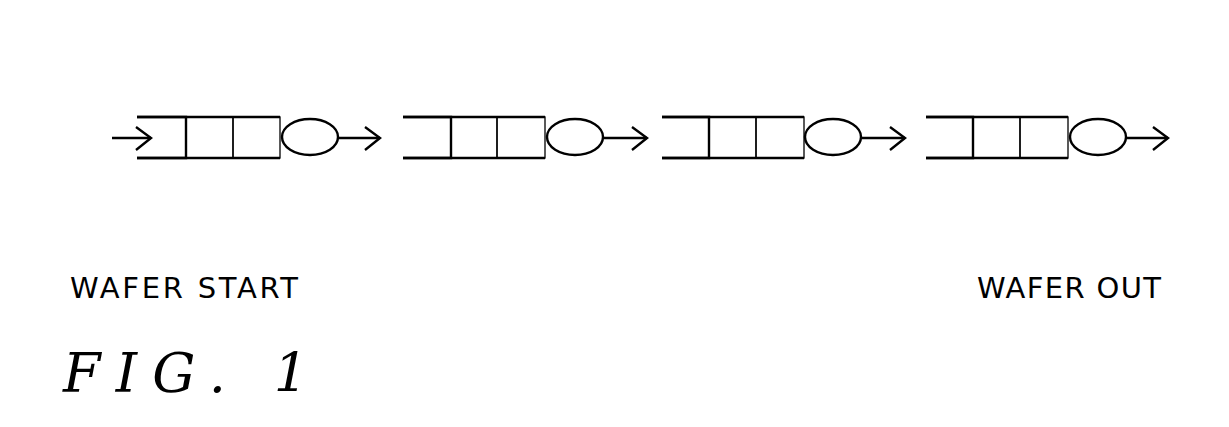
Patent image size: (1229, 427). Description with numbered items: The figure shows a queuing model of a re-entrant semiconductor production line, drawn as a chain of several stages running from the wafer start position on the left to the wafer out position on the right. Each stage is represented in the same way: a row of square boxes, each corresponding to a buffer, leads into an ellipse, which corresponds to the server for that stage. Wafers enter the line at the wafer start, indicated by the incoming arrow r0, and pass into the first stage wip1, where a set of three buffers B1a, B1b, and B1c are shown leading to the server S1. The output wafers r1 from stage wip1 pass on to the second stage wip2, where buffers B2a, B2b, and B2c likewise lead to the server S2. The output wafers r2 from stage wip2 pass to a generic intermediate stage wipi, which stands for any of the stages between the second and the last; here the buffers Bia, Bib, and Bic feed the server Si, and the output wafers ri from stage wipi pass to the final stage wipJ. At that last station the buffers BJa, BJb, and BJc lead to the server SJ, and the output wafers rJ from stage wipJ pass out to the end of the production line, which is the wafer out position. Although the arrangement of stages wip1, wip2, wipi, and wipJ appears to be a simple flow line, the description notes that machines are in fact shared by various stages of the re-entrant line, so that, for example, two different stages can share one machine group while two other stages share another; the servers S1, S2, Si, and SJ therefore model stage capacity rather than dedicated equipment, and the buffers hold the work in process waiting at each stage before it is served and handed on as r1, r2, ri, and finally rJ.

The wafer start rate into stage 1 r0 is at (111, 134).
The stage wip1 is at (214, 90).
The buffer B1a is at (168, 144).
The buffer B1b is at (217, 144).
The buffer B1c is at (263, 144).
The server S1 is at (317, 128).
The output wafers r1 is at (359, 121).
The stage wip2 is at (476, 92).
The buffer B2a is at (435, 144).
The buffer B2b is at (482, 144).
The buffer B2c is at (528, 144).
The server S2 is at (582, 128).
The output wafers r2 is at (625, 121).
The stage wipi is at (740, 92).
The buffer Bia is at (698, 144).
The buffer Bib is at (745, 144).
The buffer Bic is at (792, 144).
The server Si is at (847, 128).
The output wafers ri is at (883, 121).
The stage wipJ is at (1005, 92).
The buffer BJa is at (963, 144).
The buffer BJb is at (1012, 144).
The buffer BJc is at (1058, 144).
The server SJ is at (1112, 128).
The output wafers rJ is at (1147, 121).